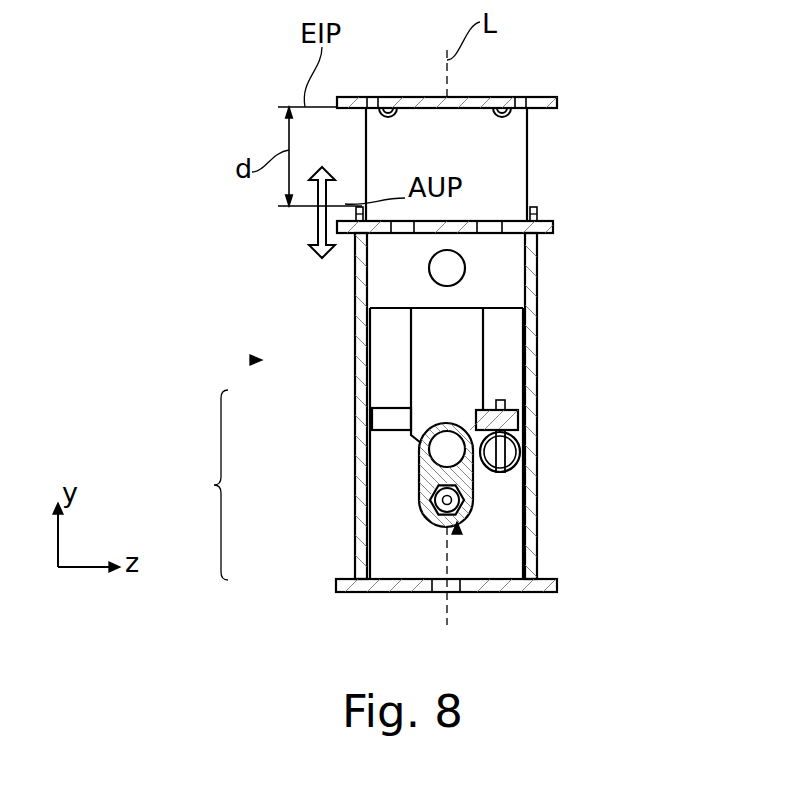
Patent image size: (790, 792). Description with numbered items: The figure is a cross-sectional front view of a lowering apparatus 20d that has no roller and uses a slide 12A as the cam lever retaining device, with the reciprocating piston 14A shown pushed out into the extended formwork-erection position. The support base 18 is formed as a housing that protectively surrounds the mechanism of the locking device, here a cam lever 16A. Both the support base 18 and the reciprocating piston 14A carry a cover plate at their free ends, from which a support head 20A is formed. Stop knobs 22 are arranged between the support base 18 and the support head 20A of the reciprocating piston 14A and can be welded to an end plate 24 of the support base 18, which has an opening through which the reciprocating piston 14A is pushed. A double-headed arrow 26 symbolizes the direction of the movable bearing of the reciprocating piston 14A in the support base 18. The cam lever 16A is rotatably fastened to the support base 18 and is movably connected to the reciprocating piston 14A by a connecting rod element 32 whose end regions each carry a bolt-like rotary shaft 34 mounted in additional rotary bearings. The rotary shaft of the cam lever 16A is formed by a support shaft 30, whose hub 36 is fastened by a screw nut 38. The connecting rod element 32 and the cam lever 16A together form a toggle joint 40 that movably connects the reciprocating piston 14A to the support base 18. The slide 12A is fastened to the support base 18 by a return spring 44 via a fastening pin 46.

The support head 20A is at (557, 107).
The stop knobs 22 is at (495, 143).
The reciprocating piston 14A is at (528, 170).
The end plate 24 is at (553, 228).
The support base 18 is at (355, 312).
The rotary shaft 34 is at (447, 268).
The connecting rod element 32 is at (432, 338).
The slide 12A is at (387, 420).
The support shaft 30 is at (430, 500).
The cam lever 16A is at (430, 478).
The screw nut 38 is at (462, 502).
The hub 36 is at (457, 530).
The fastening pin 46 is at (503, 400).
The return spring 44 is at (517, 447).
The double-headed arrow 26 is at (318, 217).
The toggle joint 40 is at (200, 485).
The lowering apparatus 20d is at (252, 360).